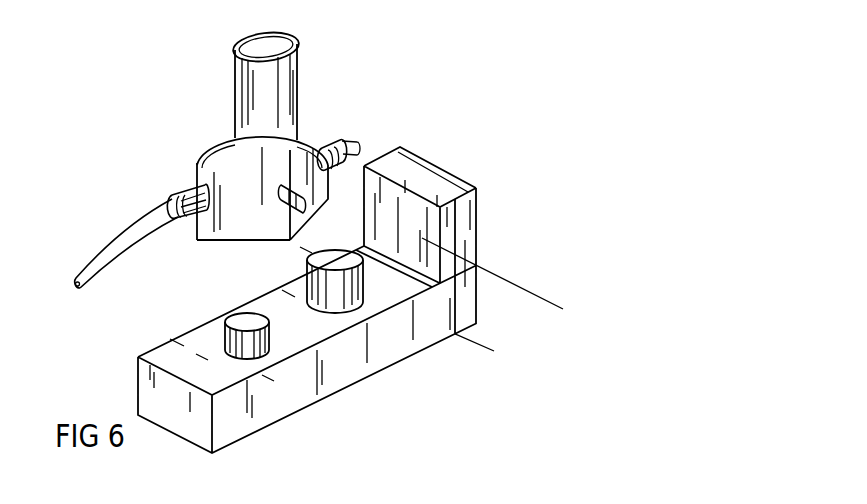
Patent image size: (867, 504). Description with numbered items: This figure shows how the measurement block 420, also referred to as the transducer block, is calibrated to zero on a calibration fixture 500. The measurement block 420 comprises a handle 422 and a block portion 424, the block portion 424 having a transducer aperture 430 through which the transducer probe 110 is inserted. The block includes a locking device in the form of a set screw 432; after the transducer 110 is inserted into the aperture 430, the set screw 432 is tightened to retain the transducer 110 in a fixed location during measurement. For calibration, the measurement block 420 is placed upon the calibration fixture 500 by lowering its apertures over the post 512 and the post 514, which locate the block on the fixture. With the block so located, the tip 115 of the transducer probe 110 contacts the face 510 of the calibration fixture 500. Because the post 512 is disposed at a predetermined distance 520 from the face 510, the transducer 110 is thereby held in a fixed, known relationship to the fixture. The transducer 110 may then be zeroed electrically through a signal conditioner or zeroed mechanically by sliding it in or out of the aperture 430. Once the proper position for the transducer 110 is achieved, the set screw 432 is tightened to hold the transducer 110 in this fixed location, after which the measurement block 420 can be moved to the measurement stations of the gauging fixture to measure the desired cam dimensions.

The transducer probe 110 is at (193, 185).
The tip 115 is at (335, 148).
The measurement block 420 is at (168, 80).
The handle 422 is at (268, 80).
The block portion 424 is at (224, 203).
The transducer aperture 430 is at (193, 182).
The set screw 432 is at (290, 196).
The calibration fixture 500 is at (471, 217).
The face 510 is at (413, 226).
The post 512 is at (343, 301).
The post 514 is at (245, 346).
The predetermined distance 520 is at (546, 302).